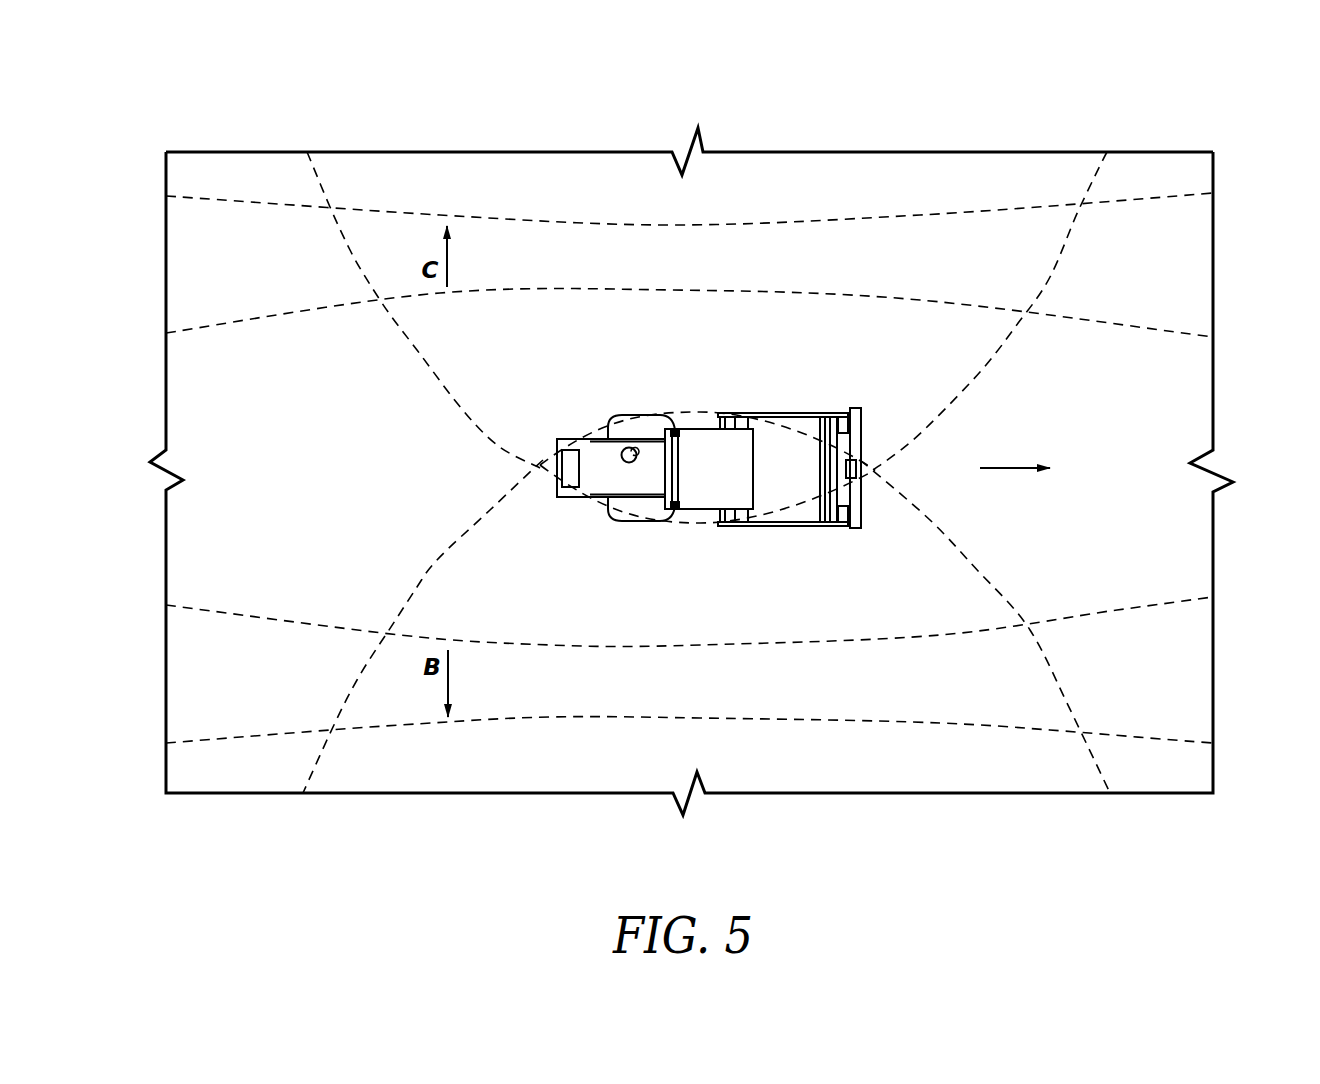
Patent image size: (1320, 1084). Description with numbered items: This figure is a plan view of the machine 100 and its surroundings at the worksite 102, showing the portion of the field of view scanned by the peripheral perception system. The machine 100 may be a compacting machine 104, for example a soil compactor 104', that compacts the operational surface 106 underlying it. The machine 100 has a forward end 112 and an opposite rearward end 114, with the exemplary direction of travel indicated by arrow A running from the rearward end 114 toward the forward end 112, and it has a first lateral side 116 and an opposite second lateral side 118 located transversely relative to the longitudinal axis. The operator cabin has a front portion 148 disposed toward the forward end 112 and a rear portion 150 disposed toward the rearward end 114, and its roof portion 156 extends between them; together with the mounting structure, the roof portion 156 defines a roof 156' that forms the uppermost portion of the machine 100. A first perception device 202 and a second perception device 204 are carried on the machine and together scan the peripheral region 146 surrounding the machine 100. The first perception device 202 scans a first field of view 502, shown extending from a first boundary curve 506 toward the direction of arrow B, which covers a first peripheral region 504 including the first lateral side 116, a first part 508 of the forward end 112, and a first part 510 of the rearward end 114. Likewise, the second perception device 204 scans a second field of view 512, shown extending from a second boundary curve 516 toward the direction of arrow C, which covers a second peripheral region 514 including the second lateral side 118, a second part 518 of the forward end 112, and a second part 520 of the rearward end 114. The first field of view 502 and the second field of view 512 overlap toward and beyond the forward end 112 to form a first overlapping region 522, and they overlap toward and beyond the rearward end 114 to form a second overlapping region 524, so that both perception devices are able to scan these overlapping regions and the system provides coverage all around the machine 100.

The machine 100 is at (767, 478).
The worksite 102 is at (1164, 146).
The compacting machine 104 is at (843, 678).
The soil compactor 104' is at (815, 264).
The operational surface 106 is at (997, 420).
The forward end 112 is at (870, 490).
The rearward end 114 is at (547, 467).
The first lateral side 116 is at (661, 474).
The second lateral side 118 is at (700, 413).
The peripheral region 146 is at (1048, 152).
The front portion 148 is at (755, 488).
The rear portion 150 is at (628, 532).
The roof portion 156 is at (715, 449).
The roof 156' is at (715, 489).
The first perception device 202 is at (676, 522).
The second perception device 204 is at (677, 420).
The first field of view 502 is at (783, 612).
The first peripheral region 504 is at (641, 636).
The first boundary curve 506 is at (606, 500).
The first part of the forward end 508 is at (890, 515).
The first part of the rearward end 510 is at (533, 498).
The second field of view 512 is at (812, 343).
The second peripheral region 514 is at (649, 331).
The second boundary curve 516 is at (598, 427).
The second part of the forward end 518 is at (877, 427).
The second part of the rearward end 520 is at (537, 443).
The first overlapping region 522 is at (1098, 446).
The second overlapping region 524 is at (288, 450).